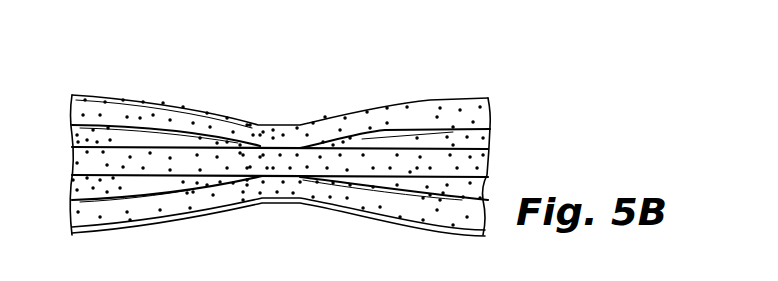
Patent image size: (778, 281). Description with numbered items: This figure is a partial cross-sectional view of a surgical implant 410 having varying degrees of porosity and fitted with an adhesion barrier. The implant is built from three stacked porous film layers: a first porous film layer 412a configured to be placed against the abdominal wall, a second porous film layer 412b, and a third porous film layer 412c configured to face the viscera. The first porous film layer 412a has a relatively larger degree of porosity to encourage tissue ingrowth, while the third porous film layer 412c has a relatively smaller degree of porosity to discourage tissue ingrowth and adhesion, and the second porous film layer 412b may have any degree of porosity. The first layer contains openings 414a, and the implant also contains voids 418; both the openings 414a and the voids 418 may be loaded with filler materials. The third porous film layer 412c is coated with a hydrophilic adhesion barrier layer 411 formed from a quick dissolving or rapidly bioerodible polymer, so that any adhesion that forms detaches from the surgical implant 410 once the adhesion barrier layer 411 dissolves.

The surgical implant 410 is at (130, 73).
The adhesion barrier layer 411 is at (363, 219).
The first porous film layer 412a is at (375, 112).
The second porous film layer 412b is at (410, 160).
The third porous film layer 412c is at (437, 218).
The openings 414a is at (218, 154).
The voids 418 is at (152, 140).